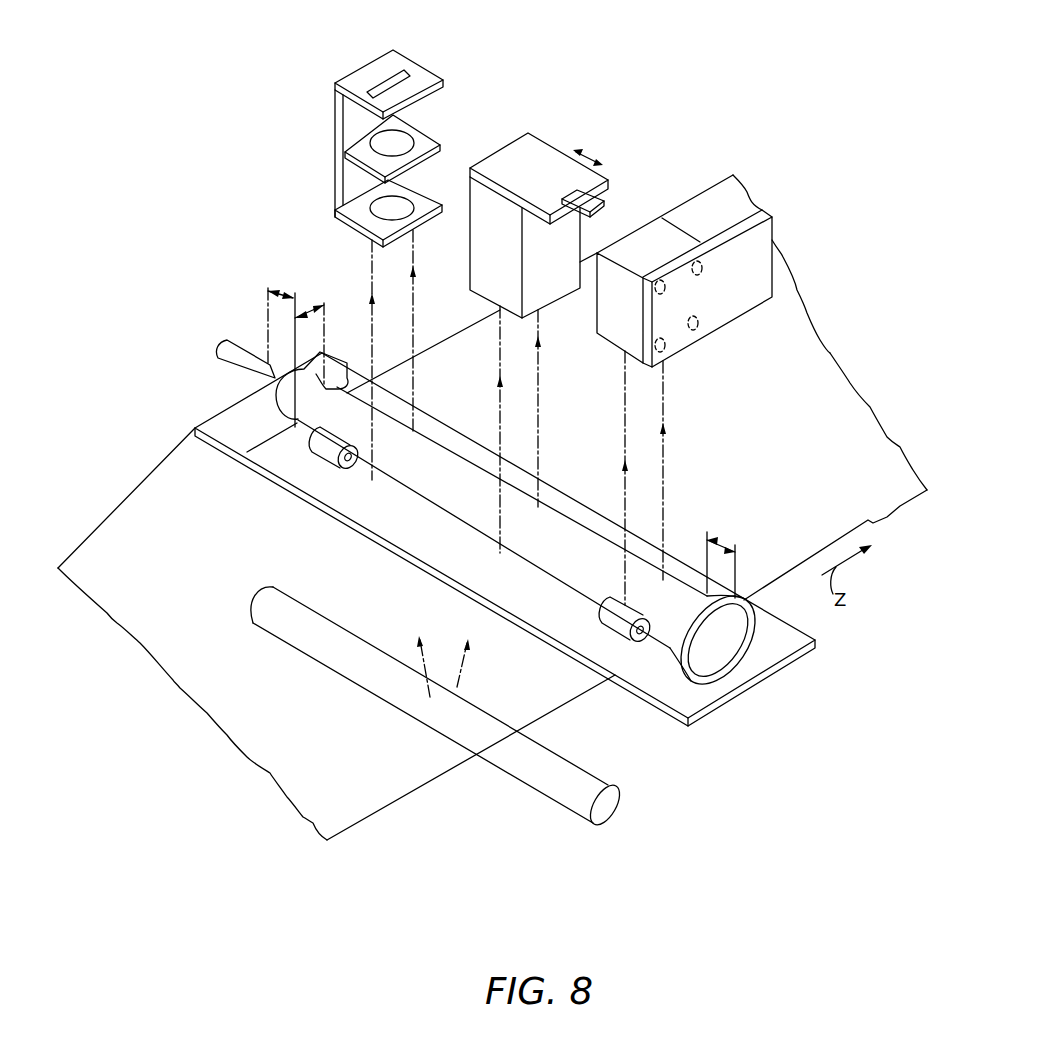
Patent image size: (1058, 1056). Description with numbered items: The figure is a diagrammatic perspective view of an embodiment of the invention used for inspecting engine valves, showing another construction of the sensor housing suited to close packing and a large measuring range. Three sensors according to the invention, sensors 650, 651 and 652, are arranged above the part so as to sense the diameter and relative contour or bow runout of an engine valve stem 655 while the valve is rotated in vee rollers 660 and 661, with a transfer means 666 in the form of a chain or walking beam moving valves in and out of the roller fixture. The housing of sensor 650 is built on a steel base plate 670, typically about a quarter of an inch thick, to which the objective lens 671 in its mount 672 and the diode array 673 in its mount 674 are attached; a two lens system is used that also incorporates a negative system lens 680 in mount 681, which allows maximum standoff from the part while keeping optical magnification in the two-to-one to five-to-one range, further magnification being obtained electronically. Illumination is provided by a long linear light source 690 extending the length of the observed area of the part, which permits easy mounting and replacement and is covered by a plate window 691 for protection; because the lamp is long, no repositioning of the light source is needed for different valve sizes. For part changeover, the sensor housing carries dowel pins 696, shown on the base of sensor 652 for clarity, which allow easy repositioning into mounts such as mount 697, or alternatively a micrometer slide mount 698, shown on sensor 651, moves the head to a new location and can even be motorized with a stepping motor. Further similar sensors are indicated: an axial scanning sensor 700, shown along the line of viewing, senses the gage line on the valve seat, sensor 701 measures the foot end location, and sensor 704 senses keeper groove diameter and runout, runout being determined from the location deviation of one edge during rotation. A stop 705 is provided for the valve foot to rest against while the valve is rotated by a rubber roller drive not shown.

The sensor 650 is at (422, 43).
The sensor 651 is at (558, 138).
The sensor 652 is at (687, 224).
The engine valve stem 655 is at (343, 362).
The vee roller 660 is at (328, 448).
The vee roller 661 is at (620, 635).
The transfer means 666 is at (874, 473).
The steel base plate 670 is at (397, 141).
The objective lens 671 is at (400, 205).
The mount 672 is at (427, 192).
The diode array 673 is at (383, 88).
The mount 674 is at (433, 77).
The negative system lens 680 is at (375, 143).
The mount 681 is at (352, 163).
The linear light source 690 is at (577, 808).
The plate window 691 is at (755, 673).
The dowel pins 696 is at (703, 268).
The mount 697 is at (775, 237).
The micrometer slide mount 698 is at (605, 178).
The axial scanning sensor 700 is at (723, 537).
The sensor 701 is at (280, 290).
The sensor 704 is at (310, 307).
The stop 705 is at (225, 360).